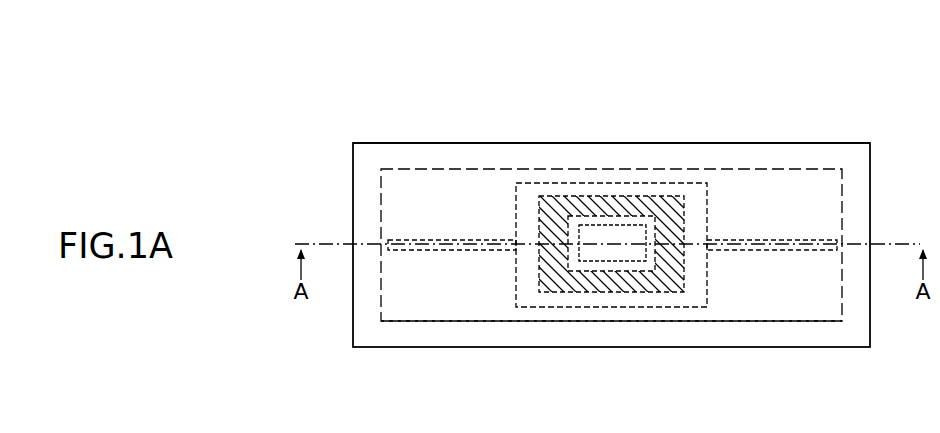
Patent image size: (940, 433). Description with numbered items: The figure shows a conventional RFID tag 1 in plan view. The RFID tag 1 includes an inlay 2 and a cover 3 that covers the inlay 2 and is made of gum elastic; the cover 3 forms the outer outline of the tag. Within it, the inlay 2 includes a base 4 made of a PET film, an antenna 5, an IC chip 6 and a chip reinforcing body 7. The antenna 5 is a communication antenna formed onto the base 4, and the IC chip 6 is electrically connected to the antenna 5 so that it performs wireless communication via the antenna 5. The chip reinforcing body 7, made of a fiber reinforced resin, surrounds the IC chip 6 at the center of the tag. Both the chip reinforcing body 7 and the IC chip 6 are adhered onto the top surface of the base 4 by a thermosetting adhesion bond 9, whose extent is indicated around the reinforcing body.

The RFID tag 1 is at (425, 100).
The inlay 2 is at (782, 158).
The cover 3 is at (571, 150).
The base 4 is at (765, 322).
The antenna 5 is at (427, 238).
The IC chip 6 is at (604, 263).
The chip reinforcing body 7 is at (658, 294).
The thermosetting adhesion bond 9 is at (524, 292).